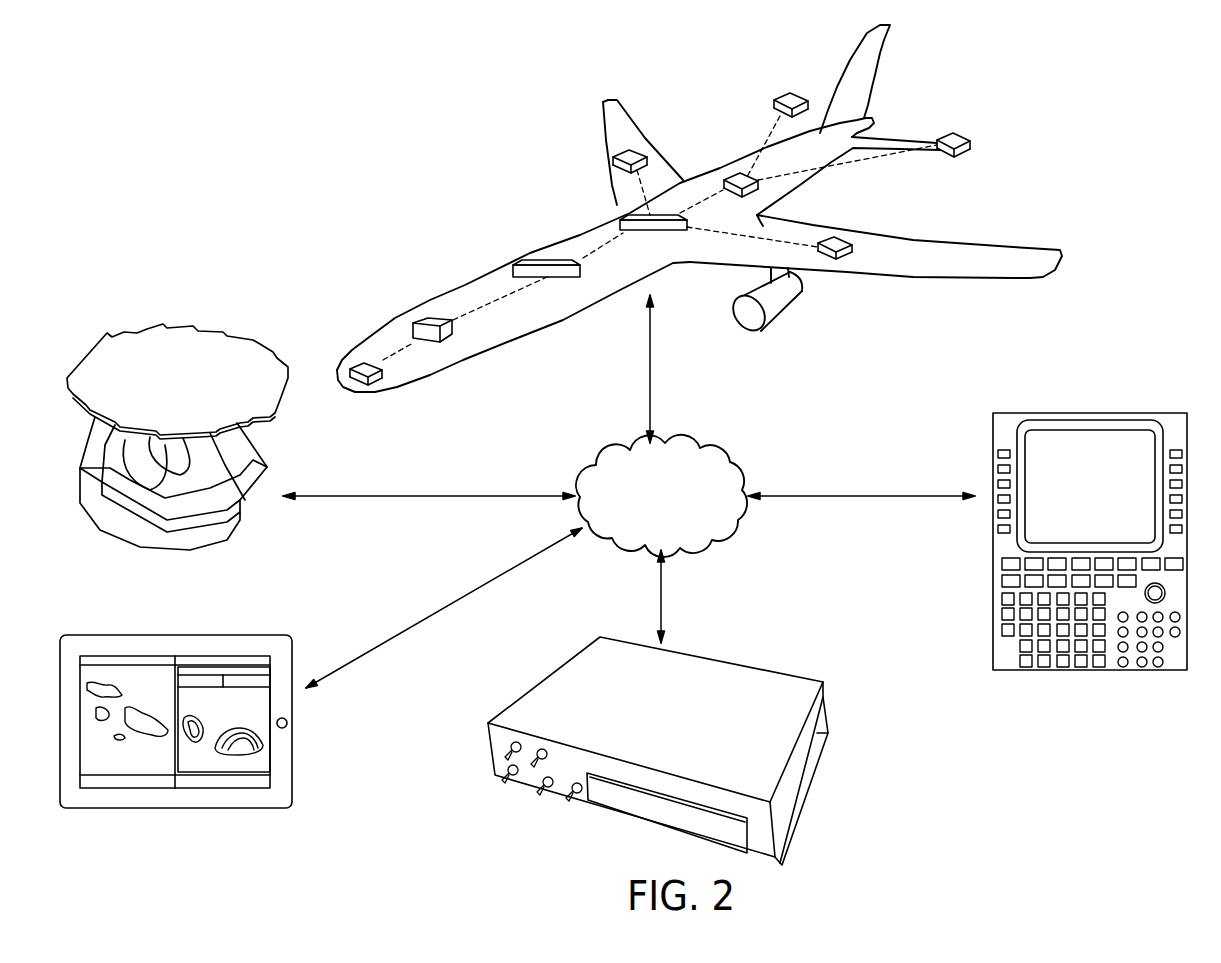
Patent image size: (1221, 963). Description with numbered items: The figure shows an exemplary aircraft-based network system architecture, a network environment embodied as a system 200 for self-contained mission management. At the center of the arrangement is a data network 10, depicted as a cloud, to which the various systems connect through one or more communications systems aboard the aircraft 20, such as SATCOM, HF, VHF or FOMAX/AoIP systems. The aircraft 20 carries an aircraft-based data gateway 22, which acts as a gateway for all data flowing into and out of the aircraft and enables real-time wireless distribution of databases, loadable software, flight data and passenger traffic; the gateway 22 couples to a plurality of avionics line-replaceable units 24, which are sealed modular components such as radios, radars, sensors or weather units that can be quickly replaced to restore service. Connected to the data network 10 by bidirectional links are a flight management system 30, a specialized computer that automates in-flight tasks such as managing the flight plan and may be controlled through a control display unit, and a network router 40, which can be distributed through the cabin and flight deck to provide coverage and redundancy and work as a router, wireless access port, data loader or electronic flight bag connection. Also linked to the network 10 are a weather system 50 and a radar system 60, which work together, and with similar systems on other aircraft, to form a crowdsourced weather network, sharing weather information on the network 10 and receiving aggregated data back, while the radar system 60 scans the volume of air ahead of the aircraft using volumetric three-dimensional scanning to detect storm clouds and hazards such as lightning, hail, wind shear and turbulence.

The system 200 is at (636, 445).
The data network 10 is at (674, 509).
The aircraft 20 is at (997, 250).
The aircraft-based data gateway 22 is at (648, 230).
The avionics line-replaceable unit 24 is at (427, 320).
The flight management system 30 is at (1098, 412).
The network router 40 is at (765, 668).
The weather system 50 is at (180, 633).
The radar system 60 is at (203, 328).